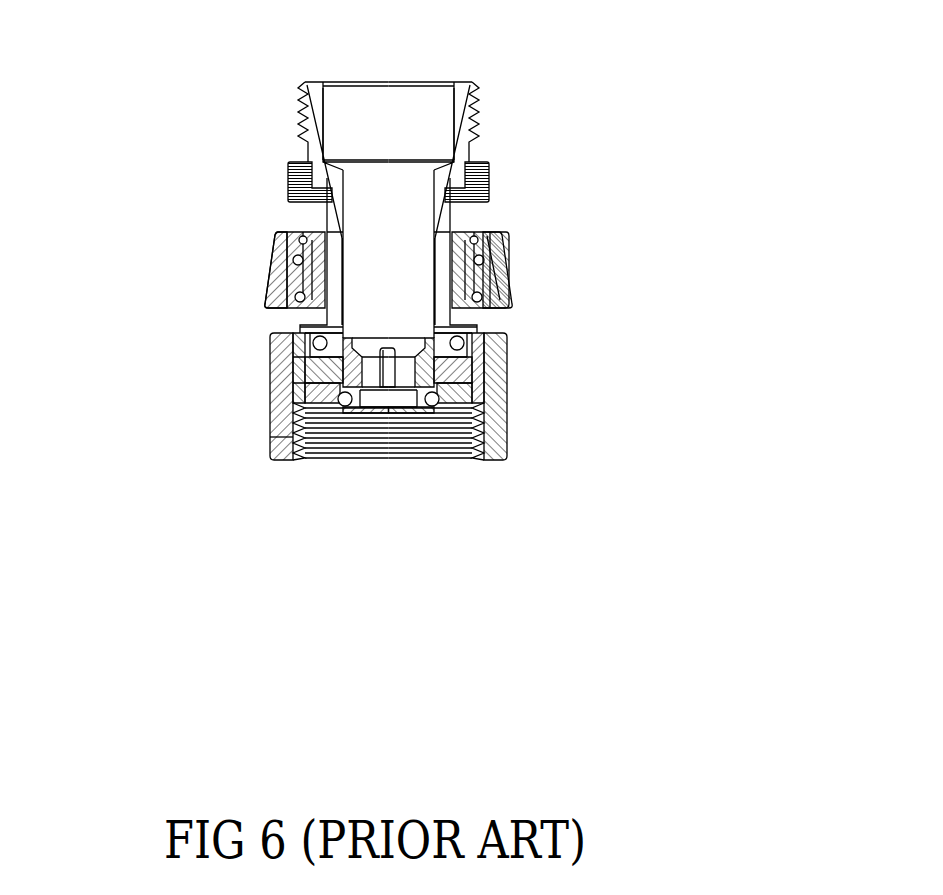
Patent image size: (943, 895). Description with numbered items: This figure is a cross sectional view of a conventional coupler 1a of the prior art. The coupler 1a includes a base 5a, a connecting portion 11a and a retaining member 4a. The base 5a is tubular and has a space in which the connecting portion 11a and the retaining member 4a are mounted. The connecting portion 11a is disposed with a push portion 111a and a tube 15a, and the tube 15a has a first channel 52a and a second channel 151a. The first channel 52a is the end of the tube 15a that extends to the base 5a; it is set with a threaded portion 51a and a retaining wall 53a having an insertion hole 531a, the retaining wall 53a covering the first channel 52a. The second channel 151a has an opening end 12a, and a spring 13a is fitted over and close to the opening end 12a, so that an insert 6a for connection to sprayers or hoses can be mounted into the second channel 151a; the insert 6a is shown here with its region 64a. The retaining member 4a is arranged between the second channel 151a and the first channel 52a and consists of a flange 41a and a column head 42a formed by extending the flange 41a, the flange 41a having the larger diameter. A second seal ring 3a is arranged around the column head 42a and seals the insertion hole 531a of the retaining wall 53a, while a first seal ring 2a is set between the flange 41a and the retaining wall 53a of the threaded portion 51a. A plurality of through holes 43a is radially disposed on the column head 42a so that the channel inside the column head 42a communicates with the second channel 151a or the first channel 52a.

The coupler 1a is at (138, 277).
The insert 6a is at (515, 78).
The fitting bore 64a is at (400, 118).
The opening end 12a is at (465, 232).
The connecting portion 11a is at (258, 298).
The push portion 111a is at (277, 262).
The spring 13a is at (500, 285).
The base 5a is at (505, 448).
The first channel 52a is at (365, 462).
The second seal ring 3a is at (450, 457).
The tube 15a is at (262, 338).
The retaining member 4a is at (300, 368).
The first seal ring 2a is at (327, 369).
The second channel 151a is at (300, 392).
The retaining wall 53a is at (290, 437).
The threaded portion 51a is at (332, 407).
The insertion hole 531a is at (328, 458).
The through holes 43a is at (437, 369).
The flange 41a is at (445, 333).
The column head 42a is at (388, 435).